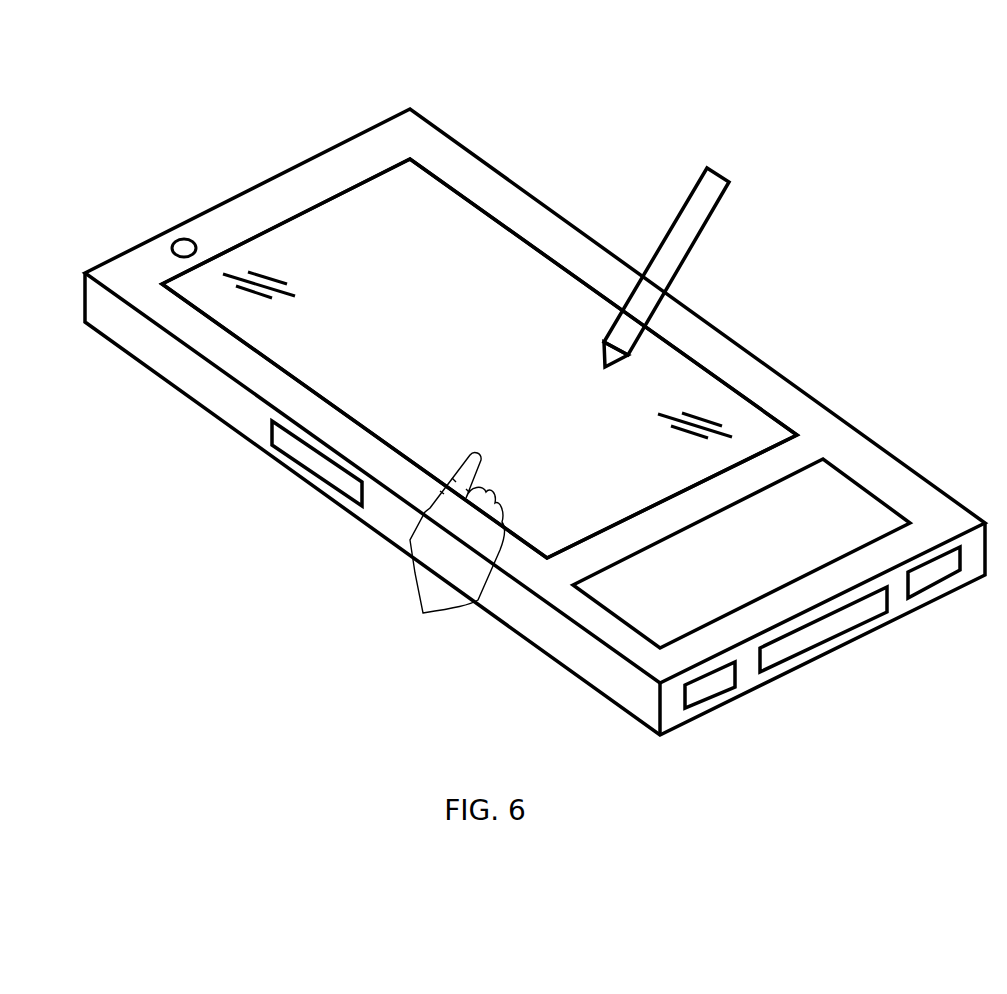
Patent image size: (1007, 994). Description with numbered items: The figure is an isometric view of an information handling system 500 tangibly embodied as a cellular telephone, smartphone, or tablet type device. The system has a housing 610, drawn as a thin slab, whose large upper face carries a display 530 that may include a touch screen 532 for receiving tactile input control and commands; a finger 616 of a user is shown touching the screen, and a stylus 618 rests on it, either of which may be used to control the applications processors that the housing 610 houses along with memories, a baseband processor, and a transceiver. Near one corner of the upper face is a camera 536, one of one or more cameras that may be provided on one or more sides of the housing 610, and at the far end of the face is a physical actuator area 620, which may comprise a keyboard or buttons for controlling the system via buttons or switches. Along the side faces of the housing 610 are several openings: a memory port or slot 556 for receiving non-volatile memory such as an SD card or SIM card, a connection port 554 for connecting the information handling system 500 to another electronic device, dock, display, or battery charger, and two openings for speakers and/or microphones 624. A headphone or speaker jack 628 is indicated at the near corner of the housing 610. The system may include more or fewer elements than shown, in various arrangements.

The information handling system 500 is at (552, 135).
The display 530 is at (383, 224).
The touch screen 532 is at (508, 362).
The camera 536 is at (175, 240).
The connection port 554 is at (835, 635).
The memory port or slot 556 is at (325, 460).
The housing 610 is at (348, 140).
The finger 616 is at (468, 457).
The stylus 618 is at (693, 192).
The physical actuator area 620 is at (835, 485).
The speakers and/or microphones 624 is at (712, 695).
The headphone or speaker jack 628 is at (112, 256).